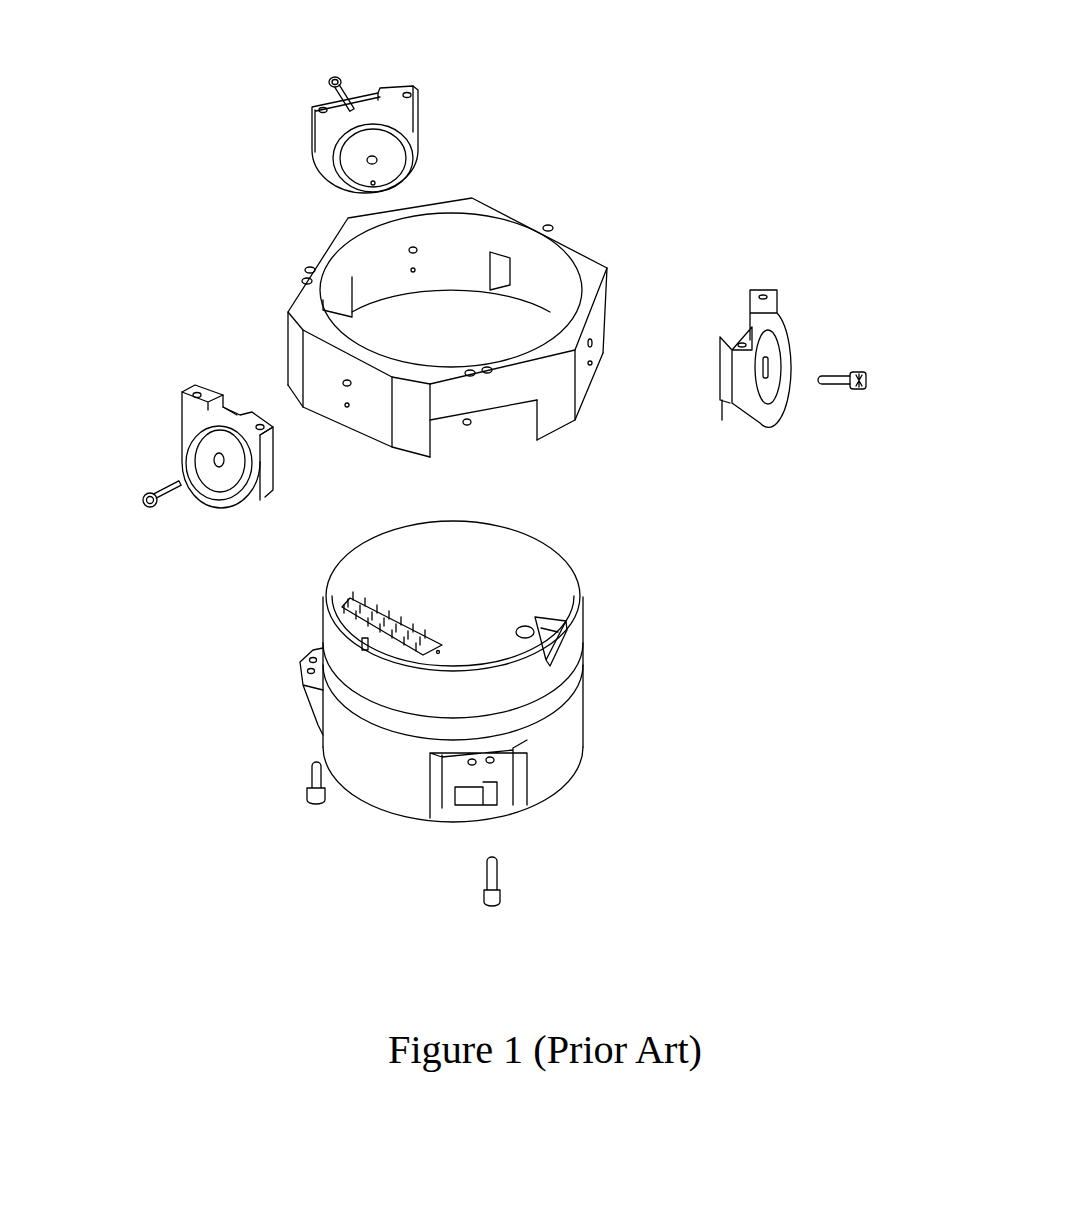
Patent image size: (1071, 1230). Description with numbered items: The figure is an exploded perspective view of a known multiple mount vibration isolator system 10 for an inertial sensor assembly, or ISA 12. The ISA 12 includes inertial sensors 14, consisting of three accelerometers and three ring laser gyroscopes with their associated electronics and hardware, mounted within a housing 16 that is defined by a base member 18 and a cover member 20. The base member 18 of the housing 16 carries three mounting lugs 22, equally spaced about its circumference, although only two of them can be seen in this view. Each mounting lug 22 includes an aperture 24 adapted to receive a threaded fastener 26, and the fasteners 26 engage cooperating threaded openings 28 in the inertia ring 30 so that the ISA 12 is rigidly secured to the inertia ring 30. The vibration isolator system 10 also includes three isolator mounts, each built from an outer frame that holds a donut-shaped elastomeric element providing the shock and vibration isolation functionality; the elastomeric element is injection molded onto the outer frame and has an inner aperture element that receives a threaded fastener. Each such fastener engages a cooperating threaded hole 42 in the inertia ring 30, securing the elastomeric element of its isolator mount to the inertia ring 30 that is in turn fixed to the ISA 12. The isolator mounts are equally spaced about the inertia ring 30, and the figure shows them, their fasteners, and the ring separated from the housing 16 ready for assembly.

The vibration isolator system 10 is at (760, 75).
The ISA 12 is at (612, 535).
The inertial sensors 14 is at (550, 637).
The housing 16 is at (508, 523).
The base member 18 is at (555, 750).
The cover member 20 is at (412, 545).
The mounting lug 22 is at (302, 677).
The aperture 24 is at (313, 658).
The threaded fastener 26 is at (307, 798).
The threaded opening 28 is at (308, 268).
The inertia ring 30 is at (498, 207).
The threaded hole 42 is at (416, 253).